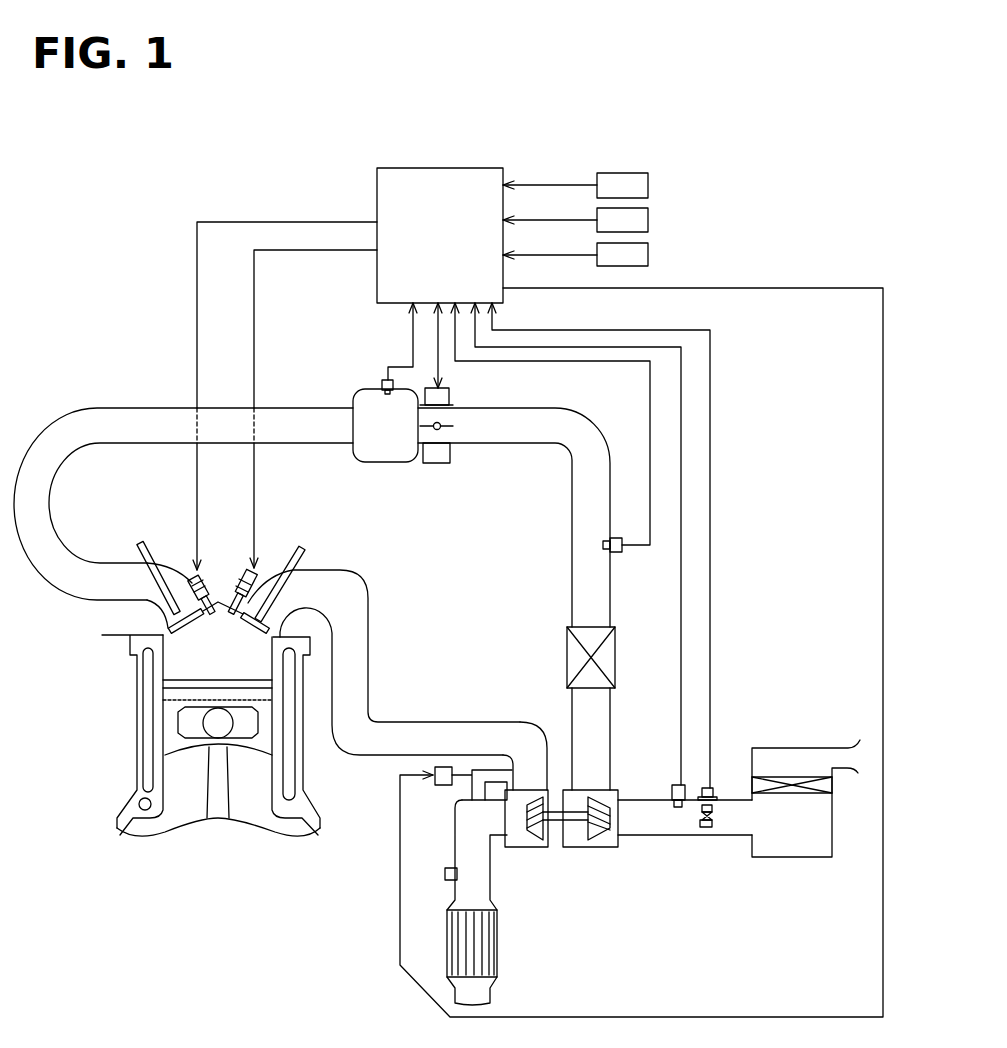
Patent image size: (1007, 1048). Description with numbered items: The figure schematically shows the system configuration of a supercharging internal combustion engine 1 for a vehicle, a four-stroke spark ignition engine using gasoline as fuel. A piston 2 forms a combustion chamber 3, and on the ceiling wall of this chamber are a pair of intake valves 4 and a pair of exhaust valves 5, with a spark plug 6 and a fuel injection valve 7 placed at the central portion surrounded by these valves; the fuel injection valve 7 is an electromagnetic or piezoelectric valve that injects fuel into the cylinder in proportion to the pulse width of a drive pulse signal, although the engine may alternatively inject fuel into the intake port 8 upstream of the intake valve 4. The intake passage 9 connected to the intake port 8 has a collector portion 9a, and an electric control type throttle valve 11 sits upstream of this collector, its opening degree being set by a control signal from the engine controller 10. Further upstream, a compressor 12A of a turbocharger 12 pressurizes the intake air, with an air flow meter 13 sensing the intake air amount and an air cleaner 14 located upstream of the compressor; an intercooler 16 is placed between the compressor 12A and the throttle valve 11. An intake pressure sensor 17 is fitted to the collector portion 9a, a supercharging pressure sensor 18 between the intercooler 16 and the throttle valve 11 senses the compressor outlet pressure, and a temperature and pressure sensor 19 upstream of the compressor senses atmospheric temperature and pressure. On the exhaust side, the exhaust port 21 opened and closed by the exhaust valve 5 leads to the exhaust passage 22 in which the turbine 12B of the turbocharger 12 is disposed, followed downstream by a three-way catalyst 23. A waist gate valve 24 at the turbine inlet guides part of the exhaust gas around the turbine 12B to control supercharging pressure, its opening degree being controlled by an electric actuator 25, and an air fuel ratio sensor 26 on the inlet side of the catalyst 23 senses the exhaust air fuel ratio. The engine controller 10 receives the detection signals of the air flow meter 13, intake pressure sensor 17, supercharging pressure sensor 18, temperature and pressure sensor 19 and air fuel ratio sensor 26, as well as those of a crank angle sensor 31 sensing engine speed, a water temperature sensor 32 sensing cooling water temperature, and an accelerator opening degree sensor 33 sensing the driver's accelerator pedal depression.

The internal combustion engine 1 is at (110, 745).
The piston 2 is at (172, 708).
The combustion chamber 3 is at (207, 658).
The intake valve 4 is at (162, 640).
The exhaust valve 5 is at (308, 633).
The spark plug 6 is at (243, 580).
The fuel injection valve 7 is at (193, 576).
The intake port 8 is at (147, 594).
The intake passage 9 is at (287, 405).
The collector portion 9a is at (385, 463).
The engine controller 10 is at (377, 274).
The electric control type throttle valve 11 is at (448, 425).
The turbocharger 12 is at (566, 880).
The compressor 12A is at (593, 841).
The turbine 12B is at (535, 841).
The air flow meter 13 is at (714, 818).
The air cleaner 14 is at (790, 780).
The intercooler 16 is at (610, 657).
The intake pressure sensor 17 is at (383, 378).
The supercharging pressure sensor 18 is at (621, 554).
The temperature and pressure sensor 19 is at (675, 785).
The exhaust port 21 is at (330, 592).
The exhaust passage 22 is at (453, 728).
The catalyst 23 is at (490, 966).
The waist gate valve 24 is at (545, 740).
The electric actuator 25 is at (445, 787).
The air fuel ratio sensor 26 is at (445, 875).
The crank angle sensor 31 is at (648, 221).
The water temperature sensor 32 is at (648, 186).
The accelerator opening degree sensor 33 is at (648, 256).